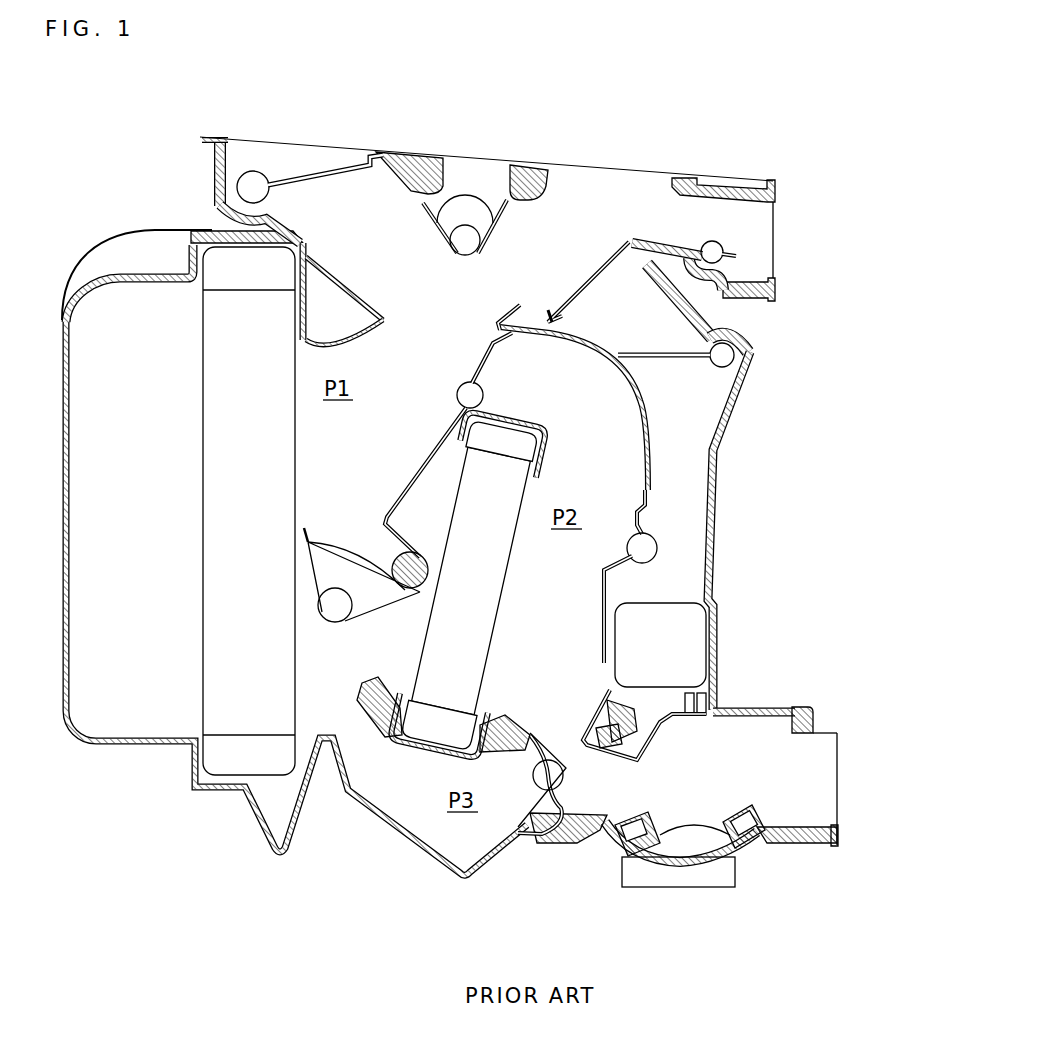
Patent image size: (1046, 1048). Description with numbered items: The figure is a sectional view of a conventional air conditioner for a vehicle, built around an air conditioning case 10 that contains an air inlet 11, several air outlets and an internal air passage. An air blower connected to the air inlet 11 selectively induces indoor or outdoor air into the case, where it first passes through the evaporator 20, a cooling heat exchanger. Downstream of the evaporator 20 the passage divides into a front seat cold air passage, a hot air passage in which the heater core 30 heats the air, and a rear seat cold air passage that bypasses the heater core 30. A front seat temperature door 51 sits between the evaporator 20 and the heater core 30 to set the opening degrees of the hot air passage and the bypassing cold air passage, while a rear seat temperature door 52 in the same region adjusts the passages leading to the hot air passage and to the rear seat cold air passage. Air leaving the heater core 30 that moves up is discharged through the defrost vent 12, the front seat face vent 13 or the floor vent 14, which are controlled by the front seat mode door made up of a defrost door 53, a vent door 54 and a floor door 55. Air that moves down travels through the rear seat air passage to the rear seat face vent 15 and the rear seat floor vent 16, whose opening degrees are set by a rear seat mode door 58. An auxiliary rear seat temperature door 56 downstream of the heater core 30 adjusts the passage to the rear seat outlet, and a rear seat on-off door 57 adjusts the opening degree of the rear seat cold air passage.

The air conditioning case 10 is at (126, 218).
The air inlet 11 is at (130, 627).
The defrost vent 12 is at (278, 150).
The front seat face vent 13 is at (580, 182).
The floor vent 14 is at (660, 637).
The rear seat face vent 15 is at (813, 777).
The rear seat floor vent 16 is at (690, 878).
The evaporator 20 is at (235, 717).
The heater core 30 is at (440, 697).
The front seat temperature door 51 is at (423, 470).
The rear seat temperature door 52 is at (363, 570).
The defrost door 53 is at (317, 170).
The vent door 54 is at (590, 270).
The floor door 55 is at (667, 360).
The auxiliary rear seat temperature door 56 is at (667, 737).
The rear seat on-off door 57 is at (545, 800).
The rear seat mode door 58 is at (660, 835).